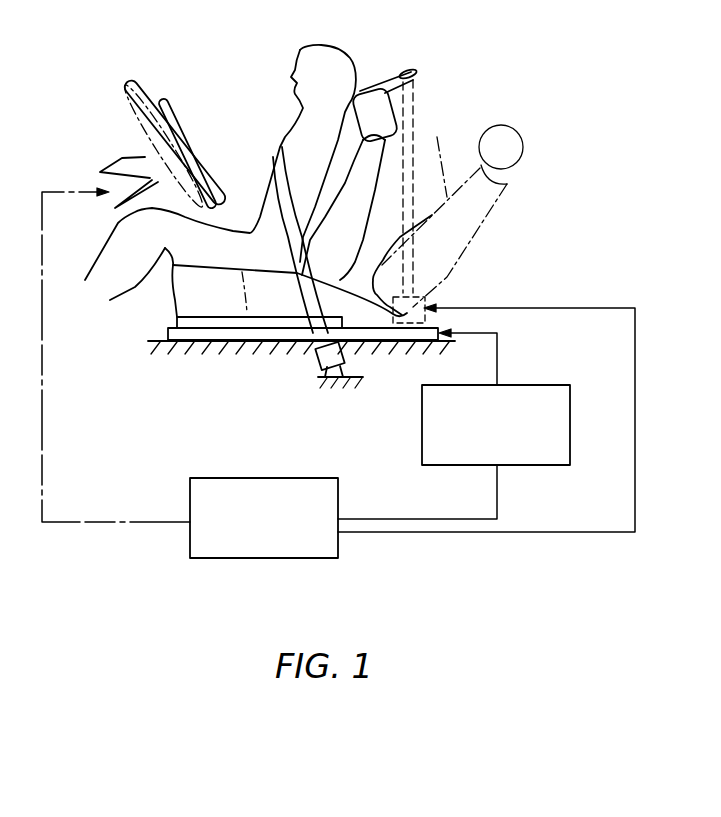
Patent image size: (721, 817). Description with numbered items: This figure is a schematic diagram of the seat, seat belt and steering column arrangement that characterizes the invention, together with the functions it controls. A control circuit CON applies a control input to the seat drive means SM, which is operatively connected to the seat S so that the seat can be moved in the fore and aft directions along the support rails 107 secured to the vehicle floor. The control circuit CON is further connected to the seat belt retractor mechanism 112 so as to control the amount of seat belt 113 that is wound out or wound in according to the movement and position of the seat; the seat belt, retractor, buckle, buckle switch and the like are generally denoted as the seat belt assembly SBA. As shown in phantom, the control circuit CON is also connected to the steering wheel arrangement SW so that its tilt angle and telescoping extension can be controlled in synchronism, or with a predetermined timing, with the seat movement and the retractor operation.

The steering wheel arrangement SW is at (188, 130).
The seat belt assembly SBA is at (272, 158).
The seat S is at (375, 155).
The seat belt 113 is at (387, 72).
The seat belt retractor mechanism 112 is at (417, 297).
The support rails 107 is at (227, 324).
The seat drive means SM is at (538, 384).
The control circuit CON is at (338, 540).